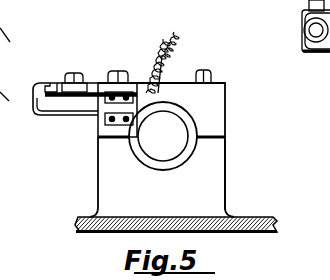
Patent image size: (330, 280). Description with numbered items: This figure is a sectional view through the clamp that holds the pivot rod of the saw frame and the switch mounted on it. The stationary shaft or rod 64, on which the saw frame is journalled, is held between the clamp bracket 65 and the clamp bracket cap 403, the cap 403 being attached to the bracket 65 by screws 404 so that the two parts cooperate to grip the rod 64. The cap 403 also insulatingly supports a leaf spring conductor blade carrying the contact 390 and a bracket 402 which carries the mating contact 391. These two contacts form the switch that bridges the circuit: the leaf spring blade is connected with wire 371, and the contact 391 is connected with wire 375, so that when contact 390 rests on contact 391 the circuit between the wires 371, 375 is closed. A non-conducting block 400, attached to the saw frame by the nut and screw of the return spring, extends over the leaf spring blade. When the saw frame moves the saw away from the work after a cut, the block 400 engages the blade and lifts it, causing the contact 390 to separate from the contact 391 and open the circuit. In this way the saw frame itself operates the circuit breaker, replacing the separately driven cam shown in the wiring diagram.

The rod 64 is at (163, 137).
The clamp bracket 65 is at (224, 164).
The wire 371 is at (161, 41).
The wire 375 is at (176, 33).
The contact 390 is at (45, 91).
The contact 391 is at (50, 84).
The non-conducting block 400 is at (84, 92).
The bracket 402 is at (98, 120).
The clamp bracket cap 403 is at (181, 95).
The screws 404 is at (212, 73).